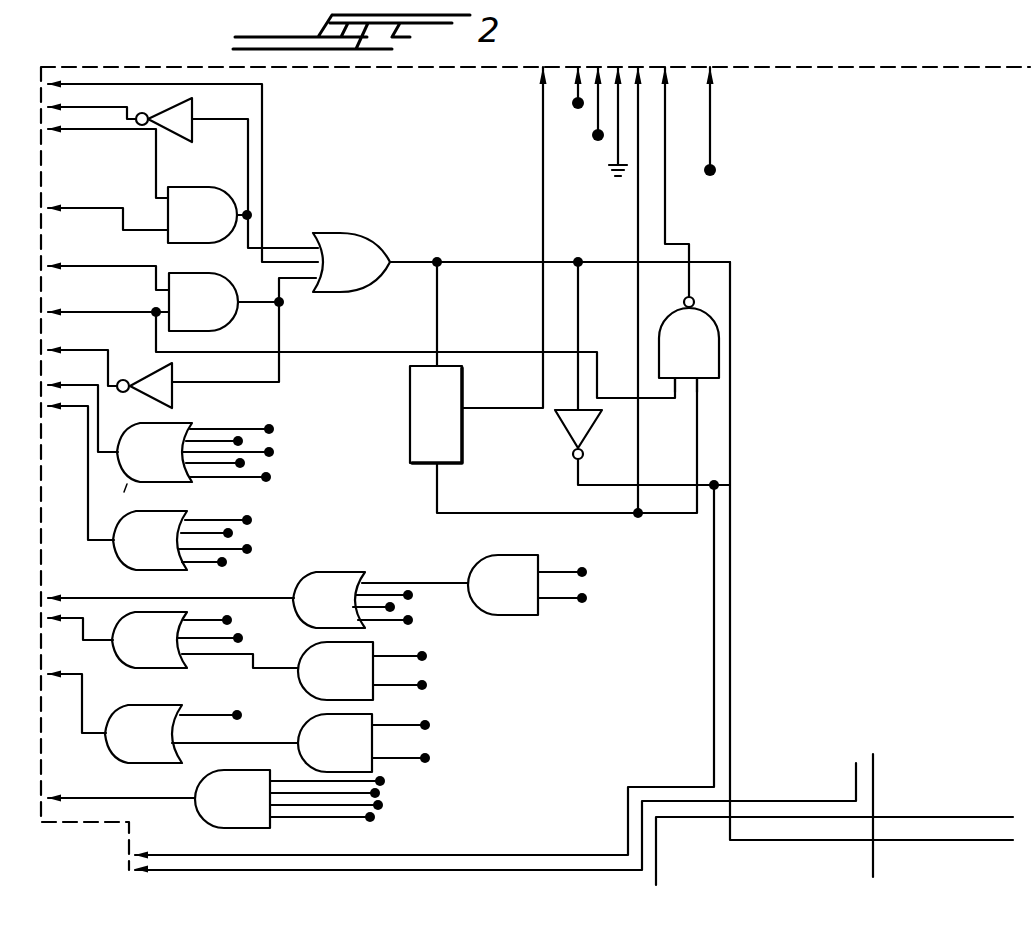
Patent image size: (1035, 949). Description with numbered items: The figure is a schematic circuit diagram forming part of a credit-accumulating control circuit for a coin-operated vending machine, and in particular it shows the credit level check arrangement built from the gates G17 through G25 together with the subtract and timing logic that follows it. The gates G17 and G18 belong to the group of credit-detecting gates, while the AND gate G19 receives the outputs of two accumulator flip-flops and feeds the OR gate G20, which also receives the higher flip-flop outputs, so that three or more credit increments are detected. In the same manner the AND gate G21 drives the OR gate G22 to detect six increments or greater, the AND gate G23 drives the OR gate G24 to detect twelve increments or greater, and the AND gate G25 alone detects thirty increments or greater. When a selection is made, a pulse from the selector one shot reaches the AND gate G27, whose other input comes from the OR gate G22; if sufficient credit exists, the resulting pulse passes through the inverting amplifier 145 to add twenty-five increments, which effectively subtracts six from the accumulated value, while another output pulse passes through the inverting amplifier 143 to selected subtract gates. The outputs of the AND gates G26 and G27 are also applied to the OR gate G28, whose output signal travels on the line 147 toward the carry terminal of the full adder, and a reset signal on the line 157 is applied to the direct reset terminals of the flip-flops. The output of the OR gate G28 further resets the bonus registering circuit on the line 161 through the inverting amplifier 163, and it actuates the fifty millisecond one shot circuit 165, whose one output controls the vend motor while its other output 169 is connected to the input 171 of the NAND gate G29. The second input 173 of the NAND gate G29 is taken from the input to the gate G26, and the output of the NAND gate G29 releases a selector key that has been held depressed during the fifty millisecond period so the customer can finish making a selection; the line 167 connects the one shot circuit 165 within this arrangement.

The inverting amplifier 143 is at (176, 382).
The inverting amplifier 145 is at (195, 105).
The line 147 is at (731, 472).
The reset line 157 is at (875, 863).
The line 161 is at (678, 487).
The inverting amplifier 163 is at (566, 435).
The one shot circuit 165 is at (410, 410).
The line 167 is at (462, 405).
The output 169 is at (437, 470).
The input 171 is at (703, 378).
The input 173 is at (684, 378).
The gate G17 is at (195, 457).
The gate G18 is at (182, 540).
The AND gate G19 is at (527, 585).
The OR gate G20 is at (380, 600).
The AND gate G21 is at (362, 671).
The OR gate G22 is at (205, 640).
The AND gate G23 is at (364, 743).
The OR gate G24 is at (201, 734).
The AND gate G25 is at (290, 799).
The AND gate G26 is at (233, 327).
The AND gate G27 is at (210, 215).
The OR gate G28 is at (521, 262).
The NAND gate G29 is at (689, 222).